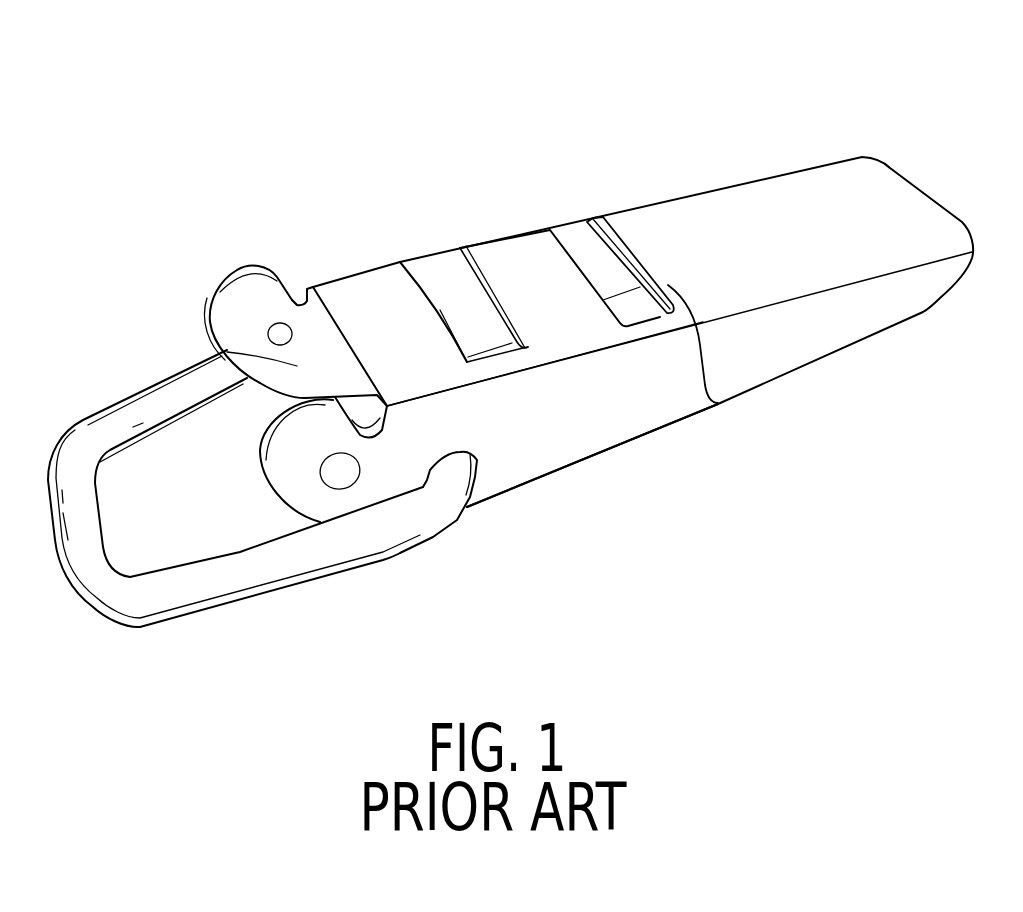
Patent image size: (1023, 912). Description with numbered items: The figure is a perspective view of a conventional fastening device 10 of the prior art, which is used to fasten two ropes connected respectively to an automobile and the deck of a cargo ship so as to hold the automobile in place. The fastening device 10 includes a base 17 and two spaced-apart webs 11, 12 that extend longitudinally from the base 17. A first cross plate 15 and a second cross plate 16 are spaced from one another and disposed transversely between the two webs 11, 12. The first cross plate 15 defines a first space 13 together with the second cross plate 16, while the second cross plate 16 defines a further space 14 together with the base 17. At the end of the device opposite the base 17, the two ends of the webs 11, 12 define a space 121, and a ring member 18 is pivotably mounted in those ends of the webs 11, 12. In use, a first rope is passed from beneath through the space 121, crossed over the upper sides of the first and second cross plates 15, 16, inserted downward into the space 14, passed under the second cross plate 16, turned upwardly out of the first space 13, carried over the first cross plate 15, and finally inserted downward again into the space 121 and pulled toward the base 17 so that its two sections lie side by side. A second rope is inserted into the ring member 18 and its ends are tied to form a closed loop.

The fastening device 10 is at (748, 158).
The web 11 is at (581, 428).
The web 12 is at (252, 288).
The space 121 is at (230, 350).
The first space 13 is at (509, 352).
The space 14 is at (645, 322).
The first cross plate 15 is at (372, 290).
The second cross plate 16 is at (505, 256).
The base 17 is at (620, 242).
The ring member 18 is at (235, 594).